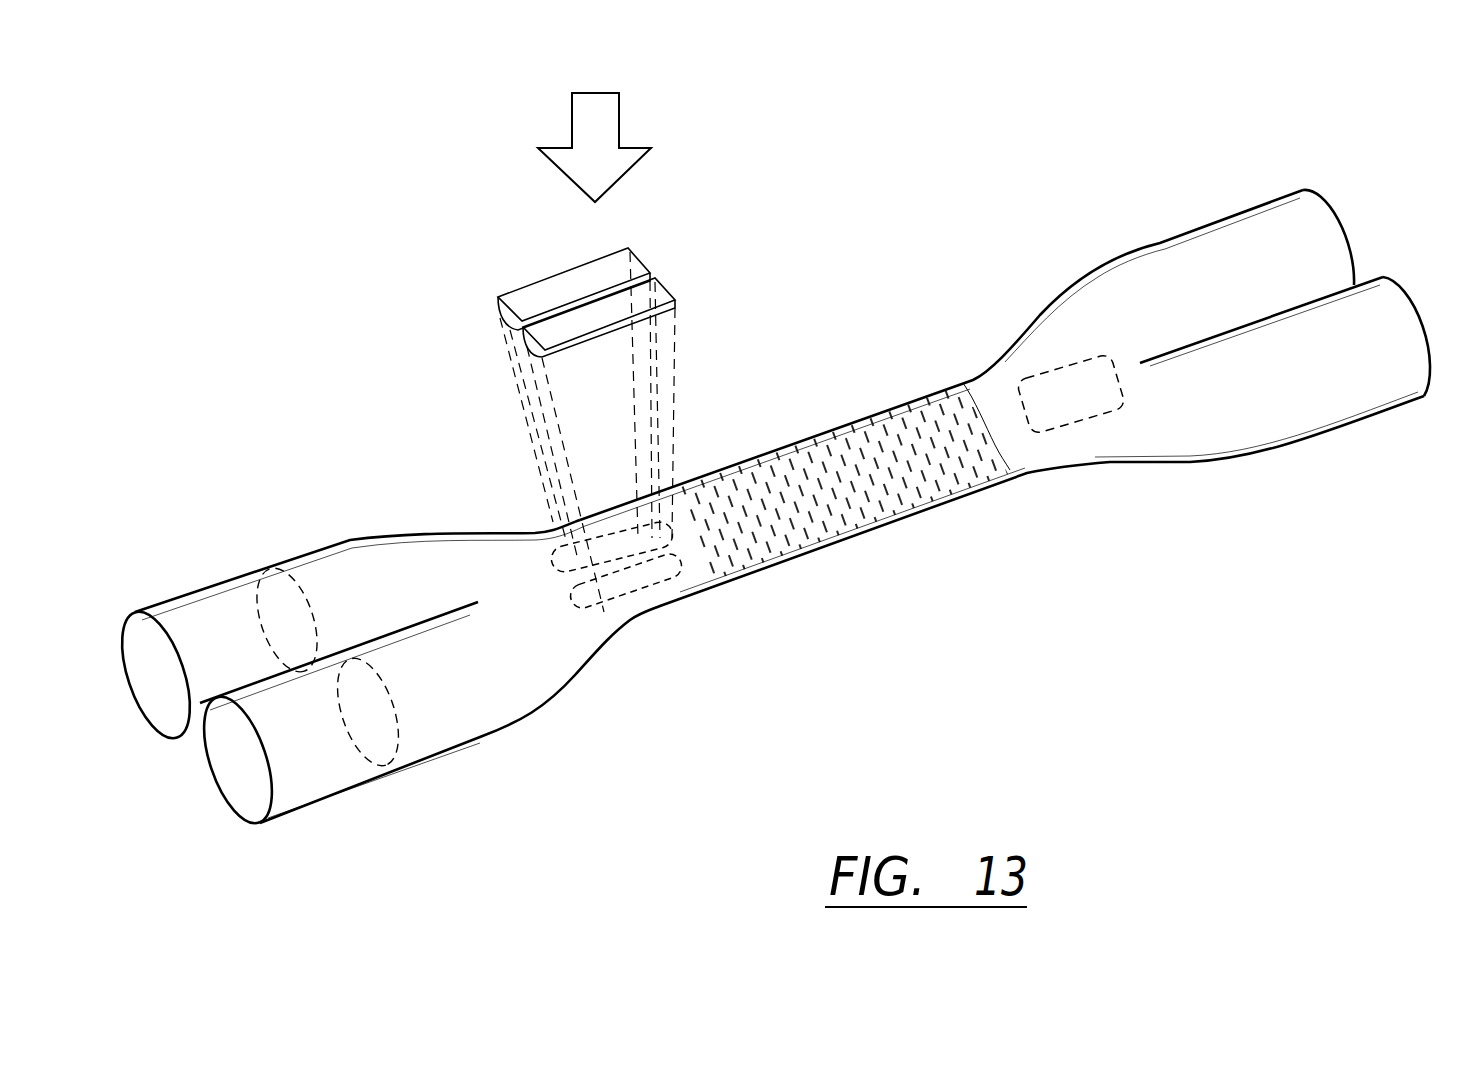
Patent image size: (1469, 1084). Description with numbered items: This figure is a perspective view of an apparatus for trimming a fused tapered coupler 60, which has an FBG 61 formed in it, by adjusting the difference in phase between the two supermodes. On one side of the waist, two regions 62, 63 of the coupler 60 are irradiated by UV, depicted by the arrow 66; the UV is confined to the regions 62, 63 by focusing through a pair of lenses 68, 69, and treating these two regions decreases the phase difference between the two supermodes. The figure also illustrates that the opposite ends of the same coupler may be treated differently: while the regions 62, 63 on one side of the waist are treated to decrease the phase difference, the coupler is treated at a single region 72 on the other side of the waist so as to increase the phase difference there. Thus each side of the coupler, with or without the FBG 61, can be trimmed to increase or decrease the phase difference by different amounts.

The coupler 60 is at (700, 652).
The FBG 61 is at (835, 553).
The region 62 is at (550, 550).
The region 63 is at (615, 596).
The arrow 66 is at (580, 128).
The lens 68 is at (628, 248).
The lens 69 is at (662, 297).
The single region 72 is at (1060, 420).